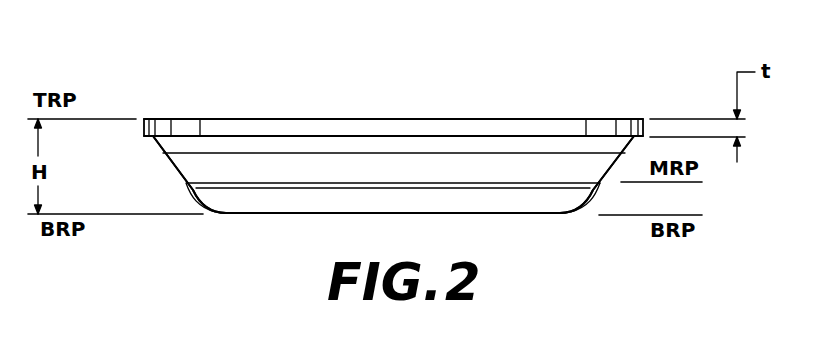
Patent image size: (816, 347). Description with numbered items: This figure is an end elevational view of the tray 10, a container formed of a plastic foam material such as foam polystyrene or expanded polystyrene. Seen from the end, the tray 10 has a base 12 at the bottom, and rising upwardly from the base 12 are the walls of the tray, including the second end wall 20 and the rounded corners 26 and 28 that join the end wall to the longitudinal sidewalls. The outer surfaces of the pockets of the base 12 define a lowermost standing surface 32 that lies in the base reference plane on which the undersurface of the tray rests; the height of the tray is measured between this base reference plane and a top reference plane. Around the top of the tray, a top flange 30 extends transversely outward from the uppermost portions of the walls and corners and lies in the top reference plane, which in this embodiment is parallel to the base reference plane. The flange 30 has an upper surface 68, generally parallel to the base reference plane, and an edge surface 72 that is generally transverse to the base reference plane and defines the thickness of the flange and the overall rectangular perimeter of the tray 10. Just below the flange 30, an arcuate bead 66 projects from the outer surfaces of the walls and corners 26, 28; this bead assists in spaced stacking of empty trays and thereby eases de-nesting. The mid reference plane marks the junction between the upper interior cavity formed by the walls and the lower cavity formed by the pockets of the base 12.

The tray 10 is at (376, 154).
The base 12 is at (476, 215).
The second end wall 20 is at (374, 165).
The corner 26 is at (608, 179).
The corner 28 is at (183, 177).
The top flange 30 is at (150, 117).
The lowermost standing surface 32 is at (274, 217).
The bead 66 is at (153, 156).
The upper surface 68 is at (151, 136).
The edge surface 72 is at (143, 137).